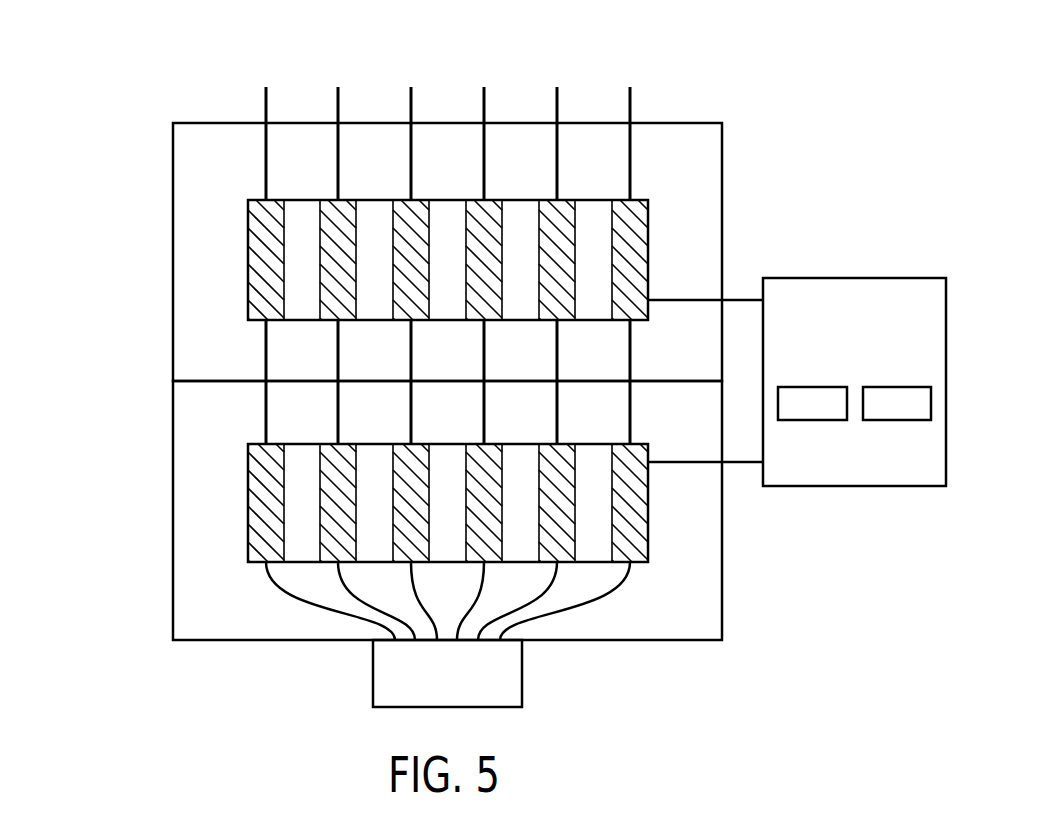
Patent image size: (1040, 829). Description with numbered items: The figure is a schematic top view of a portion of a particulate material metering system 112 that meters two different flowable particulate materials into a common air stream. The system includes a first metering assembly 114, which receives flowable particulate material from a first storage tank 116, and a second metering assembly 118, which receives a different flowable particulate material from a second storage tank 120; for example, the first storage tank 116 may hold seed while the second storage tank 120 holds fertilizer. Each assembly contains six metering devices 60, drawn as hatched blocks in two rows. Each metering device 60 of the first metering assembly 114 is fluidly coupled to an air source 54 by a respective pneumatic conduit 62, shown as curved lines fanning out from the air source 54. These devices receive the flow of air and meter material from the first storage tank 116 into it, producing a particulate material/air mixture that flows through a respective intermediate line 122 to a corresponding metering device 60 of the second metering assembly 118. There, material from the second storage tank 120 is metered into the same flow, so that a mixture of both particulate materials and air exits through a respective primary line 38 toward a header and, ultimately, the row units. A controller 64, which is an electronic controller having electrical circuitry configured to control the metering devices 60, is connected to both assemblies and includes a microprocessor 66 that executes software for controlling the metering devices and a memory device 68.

The primary line 38 is at (266, 150).
The air source 54 is at (522, 676).
The metering device 60 is at (247, 250).
The pneumatic conduit 62 is at (300, 603).
The controller 64 is at (833, 382).
The microprocessor 66 is at (808, 422).
The memory device 68 is at (900, 422).
The particulate material metering system 112 is at (748, 203).
The first metering assembly 114 is at (649, 527).
The first storage tank 116 is at (722, 528).
The second metering assembly 118 is at (648, 270).
The second storage tank 120 is at (682, 123).
The intermediate line 122 is at (338, 340).